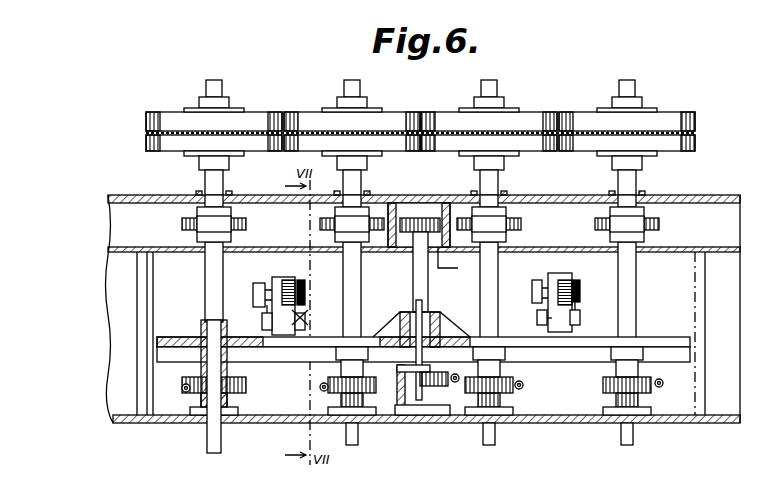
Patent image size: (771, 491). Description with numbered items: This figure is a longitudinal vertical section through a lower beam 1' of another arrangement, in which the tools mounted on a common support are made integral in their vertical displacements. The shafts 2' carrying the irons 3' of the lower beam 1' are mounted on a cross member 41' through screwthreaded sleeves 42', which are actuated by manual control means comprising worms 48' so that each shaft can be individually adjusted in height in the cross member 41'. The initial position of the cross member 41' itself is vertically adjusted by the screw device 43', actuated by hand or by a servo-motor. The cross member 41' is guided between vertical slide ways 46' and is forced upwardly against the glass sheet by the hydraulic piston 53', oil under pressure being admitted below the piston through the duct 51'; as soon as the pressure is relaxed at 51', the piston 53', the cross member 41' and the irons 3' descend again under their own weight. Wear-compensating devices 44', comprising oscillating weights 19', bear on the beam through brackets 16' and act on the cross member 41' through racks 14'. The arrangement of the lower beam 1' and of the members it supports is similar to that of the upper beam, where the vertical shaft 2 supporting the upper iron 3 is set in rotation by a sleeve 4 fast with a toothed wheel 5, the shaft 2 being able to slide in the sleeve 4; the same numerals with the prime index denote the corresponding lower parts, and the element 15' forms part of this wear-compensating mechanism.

The lower beam 1' is at (426, 441).
The vertical shaft 2 is at (431, 135).
The shafts 2' is at (404, 405).
The upper iron 3 is at (418, 108).
The iron 3' is at (426, 160).
The sleeve 4 is at (198, 213).
The toothed wheel 5 is at (248, 226).
The racks 14' is at (421, 293).
The pawl 15' is at (453, 283).
The brackets 16' is at (389, 281).
The oscillating weights 19' is at (422, 314).
The cross member 41' is at (423, 403).
The screwthreaded sleeves 42' is at (192, 365).
The screw device 43' is at (420, 351).
The wear-compensating devices 44' is at (422, 311).
The vertical slide ways 46' is at (422, 360).
The worms 48' is at (406, 407).
The duct 51' is at (457, 275).
The hydraulic piston 53' is at (414, 244).